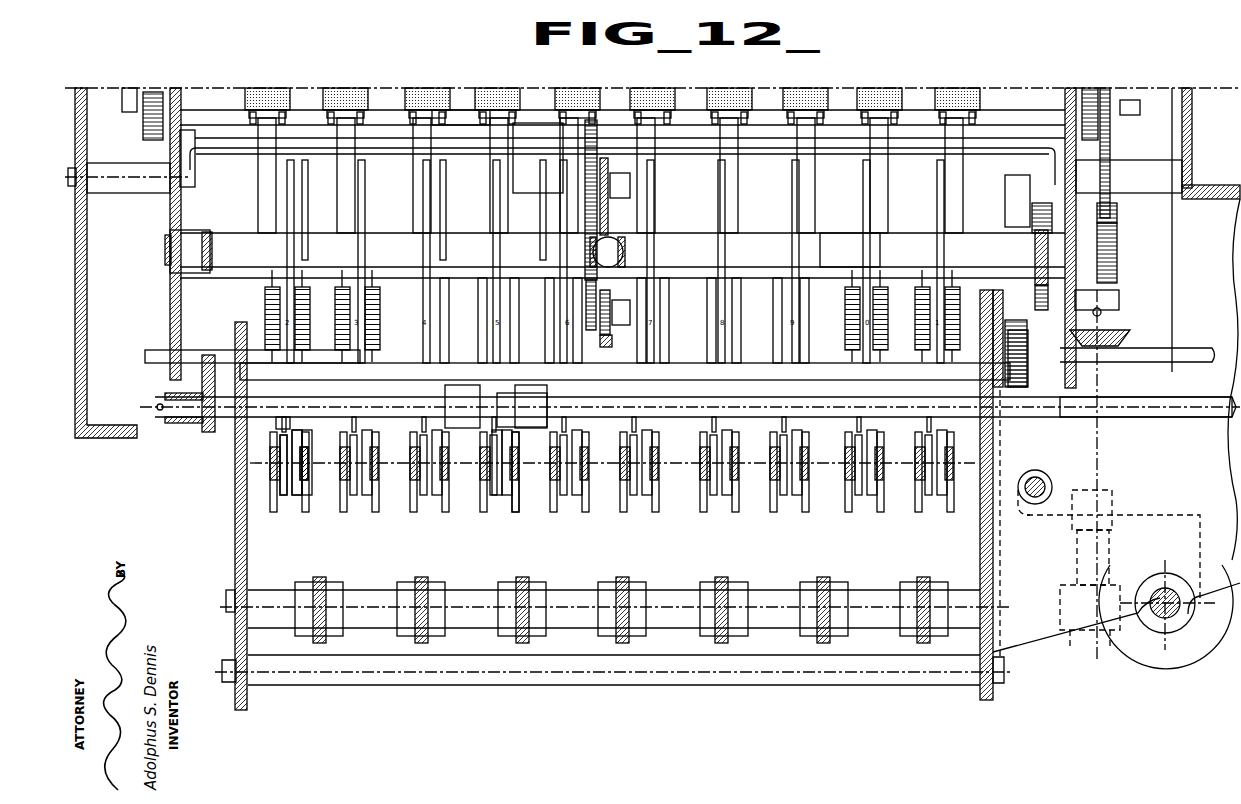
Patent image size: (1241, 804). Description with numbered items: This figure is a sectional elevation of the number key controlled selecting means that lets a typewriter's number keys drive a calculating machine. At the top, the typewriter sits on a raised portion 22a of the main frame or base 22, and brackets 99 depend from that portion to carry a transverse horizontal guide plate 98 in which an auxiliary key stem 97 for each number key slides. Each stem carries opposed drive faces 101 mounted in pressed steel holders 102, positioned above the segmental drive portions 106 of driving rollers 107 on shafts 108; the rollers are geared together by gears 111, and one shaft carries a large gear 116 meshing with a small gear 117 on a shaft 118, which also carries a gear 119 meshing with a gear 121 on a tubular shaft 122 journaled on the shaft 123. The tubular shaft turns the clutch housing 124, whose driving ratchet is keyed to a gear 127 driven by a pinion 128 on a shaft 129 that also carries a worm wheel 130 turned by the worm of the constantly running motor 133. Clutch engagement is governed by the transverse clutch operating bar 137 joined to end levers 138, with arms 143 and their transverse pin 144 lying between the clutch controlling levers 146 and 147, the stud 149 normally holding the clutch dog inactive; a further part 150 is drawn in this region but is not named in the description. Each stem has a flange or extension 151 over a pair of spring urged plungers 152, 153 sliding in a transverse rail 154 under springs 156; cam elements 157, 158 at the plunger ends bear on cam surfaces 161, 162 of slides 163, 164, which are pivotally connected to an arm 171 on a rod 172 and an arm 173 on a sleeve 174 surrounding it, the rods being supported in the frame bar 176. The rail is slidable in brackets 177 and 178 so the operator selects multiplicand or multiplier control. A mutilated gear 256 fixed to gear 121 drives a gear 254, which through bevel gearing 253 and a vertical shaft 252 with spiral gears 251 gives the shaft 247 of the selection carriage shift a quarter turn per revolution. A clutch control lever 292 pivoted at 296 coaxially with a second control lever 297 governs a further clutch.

The main frame or base 22 is at (1198, 190).
The raised portion of the base 22a is at (1192, 103).
The auxiliary key stem 97 is at (338, 130).
The transverse horizontal guide plate 98 is at (910, 150).
The bracket 99 is at (172, 214).
The drive face 101 is at (330, 92).
The pressed steel holder 102 is at (473, 98).
The segmental drive portion 106 is at (252, 126).
The driving roller 107 is at (211, 96).
The shaft 108 is at (128, 96).
The gear 111 is at (156, 93).
The large gear 116 is at (1110, 145).
The small gear 117 is at (1118, 218).
The shaft 118 is at (168, 244).
The gear 119 is at (1032, 209).
The gear 121 is at (1032, 309).
The tubular shaft 122 is at (849, 238).
The shaft 123 is at (168, 265).
The clutch housing 124 is at (625, 298).
The gear 127 is at (591, 332).
The pinion 128 is at (598, 146).
The shaft 129 is at (308, 164).
The worm wheel 130 is at (553, 193).
The motor 133 is at (453, 190).
The clutch operating bar 137 is at (230, 238).
The end lever 138 is at (1035, 243).
The arm 143 is at (627, 238).
The transverse pin 144 is at (630, 254).
The clutch controlling lever 146 is at (610, 336).
The clutch controlling lever 147 is at (606, 216).
The stud 149 is at (630, 318).
The block 150 is at (630, 193).
The flange or extension 151 is at (425, 183).
The plunger 152 is at (270, 270).
The plunger 153 is at (308, 270).
The transverse rail 154 is at (1203, 349).
The spring 156 is at (268, 299).
The cam element 157 is at (274, 426).
The cam element 158 is at (306, 430).
The cam surface 161 is at (280, 479).
The cam surface 162 is at (297, 497).
The slide 163 is at (270, 466).
The slide 164 is at (306, 470).
The arm 171 is at (482, 470).
The rod 172 is at (384, 396).
The arm 173 is at (516, 478).
The sleeve 174 is at (1183, 418).
The frame bar 176 is at (205, 433).
The bracket 177 is at (236, 537).
The bracket 178 is at (992, 563).
The shaft 247 is at (1172, 616).
The spiral gear 251 is at (1126, 586).
The vertical shaft 252 is at (1100, 450).
The bevel gearing 253 is at (1122, 336).
The gear 254 is at (1019, 389).
The mutilated gear 256 is at (1010, 176).
The clutch control lever 292 is at (314, 584).
The pivot 296 is at (230, 597).
The control lever 297 is at (328, 584).